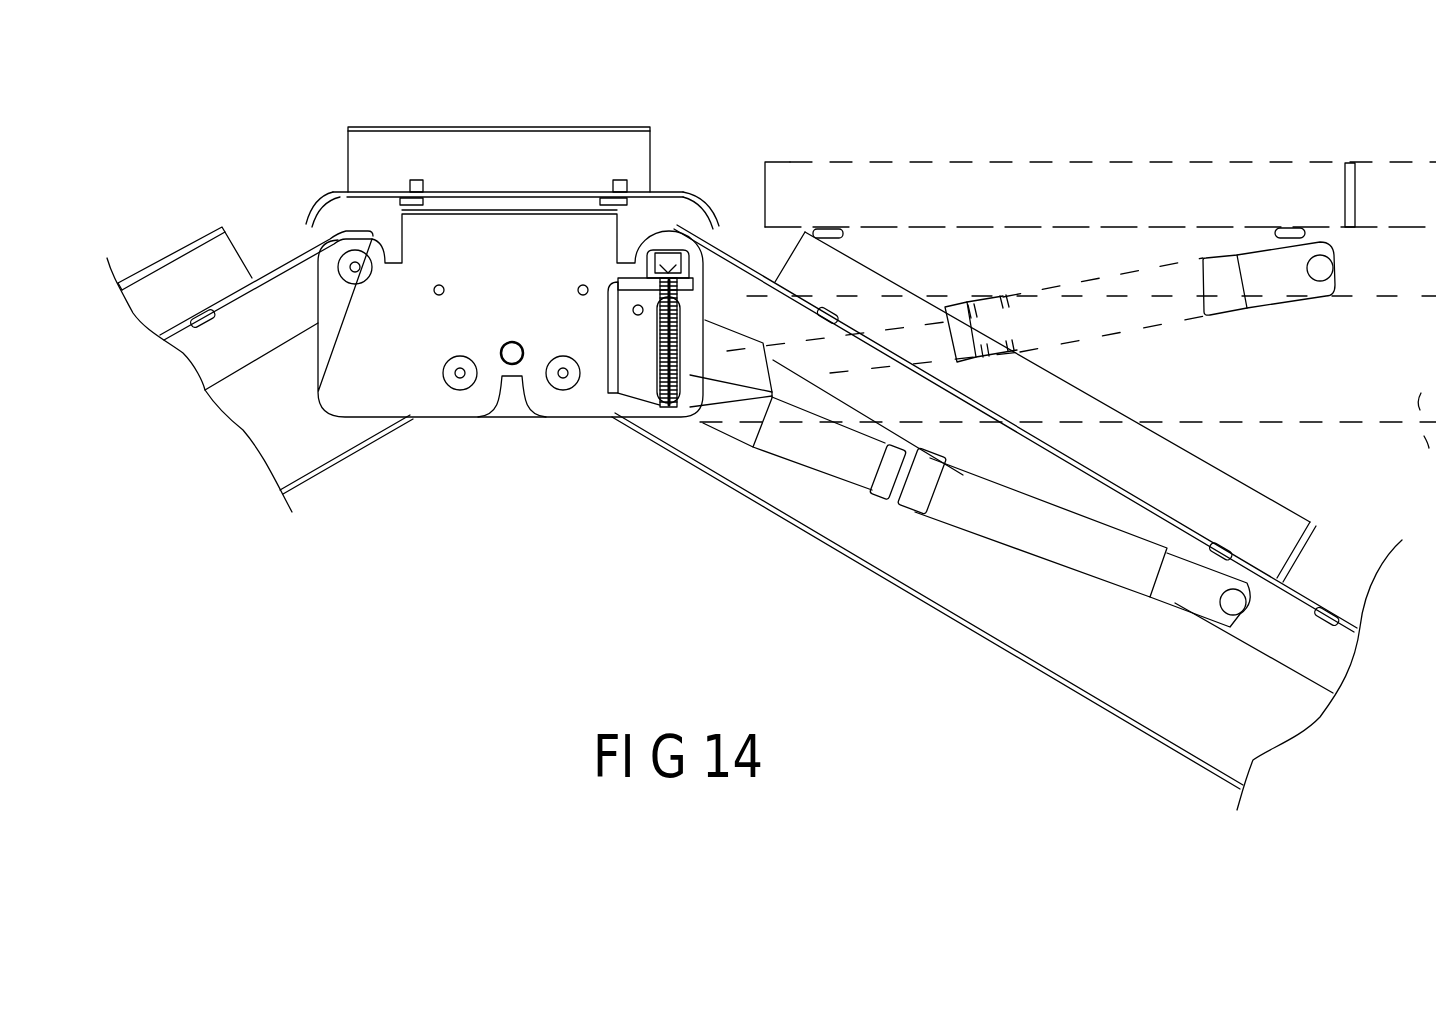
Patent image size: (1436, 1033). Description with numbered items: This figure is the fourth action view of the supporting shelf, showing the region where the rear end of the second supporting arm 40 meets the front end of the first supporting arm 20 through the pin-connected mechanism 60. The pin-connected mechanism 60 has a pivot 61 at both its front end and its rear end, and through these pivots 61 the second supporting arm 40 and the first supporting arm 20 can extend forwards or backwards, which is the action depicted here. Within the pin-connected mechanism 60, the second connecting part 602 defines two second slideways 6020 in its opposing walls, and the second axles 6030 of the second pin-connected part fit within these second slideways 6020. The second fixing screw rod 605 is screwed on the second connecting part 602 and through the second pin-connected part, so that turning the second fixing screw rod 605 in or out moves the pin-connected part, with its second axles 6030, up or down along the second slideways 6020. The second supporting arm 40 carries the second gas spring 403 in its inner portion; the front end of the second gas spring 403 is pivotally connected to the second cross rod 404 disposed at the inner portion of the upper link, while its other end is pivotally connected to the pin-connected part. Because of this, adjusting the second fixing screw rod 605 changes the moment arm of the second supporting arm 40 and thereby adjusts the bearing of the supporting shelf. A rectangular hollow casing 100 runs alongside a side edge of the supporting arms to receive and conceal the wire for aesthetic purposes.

The first supporting arm 20 is at (290, 302).
The pin-connected mechanism 60 is at (388, 380).
The pivot 61 is at (358, 265).
The second connecting part 602 is at (633, 292).
The second fixing screw rod 605 is at (683, 257).
The second slideway 6020 is at (679, 340).
The second axle 6030 is at (660, 378).
The casing 100 is at (843, 277).
The second supporting arm 40 is at (1025, 603).
The second gas spring 403 is at (970, 507).
The second cross rod 404 is at (1230, 602).